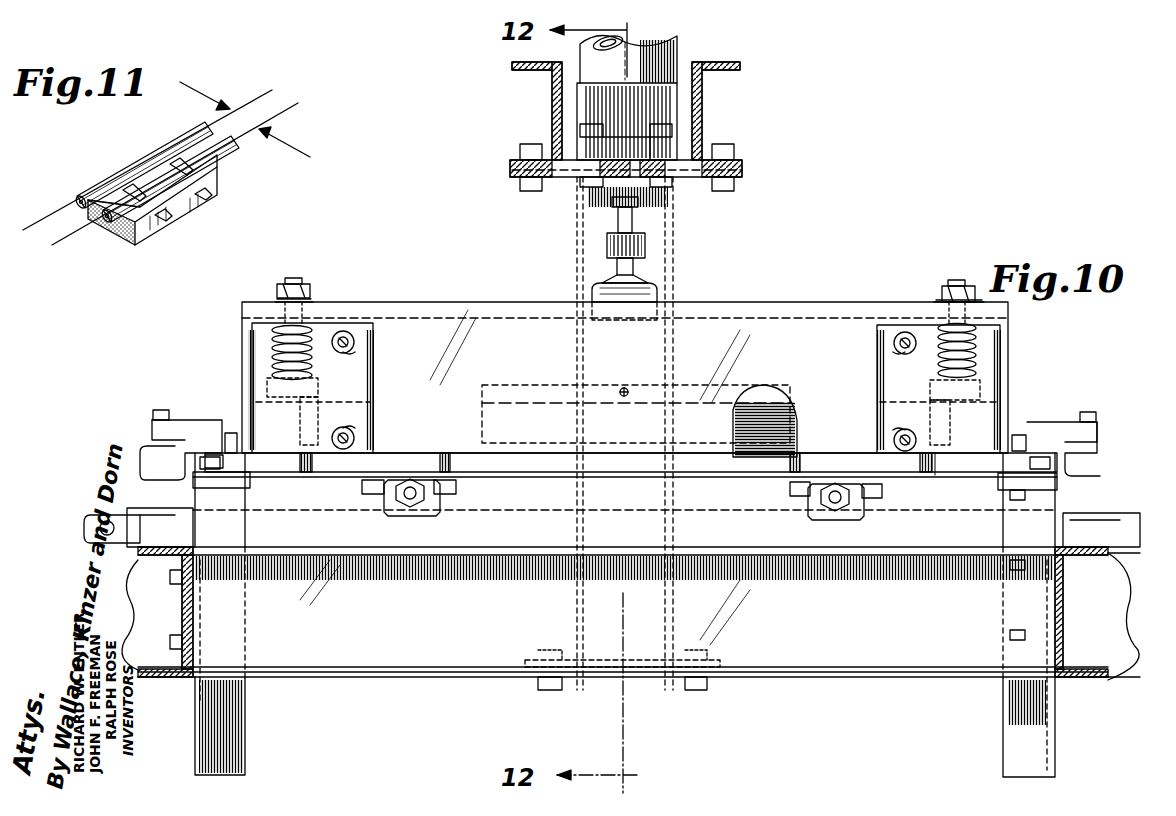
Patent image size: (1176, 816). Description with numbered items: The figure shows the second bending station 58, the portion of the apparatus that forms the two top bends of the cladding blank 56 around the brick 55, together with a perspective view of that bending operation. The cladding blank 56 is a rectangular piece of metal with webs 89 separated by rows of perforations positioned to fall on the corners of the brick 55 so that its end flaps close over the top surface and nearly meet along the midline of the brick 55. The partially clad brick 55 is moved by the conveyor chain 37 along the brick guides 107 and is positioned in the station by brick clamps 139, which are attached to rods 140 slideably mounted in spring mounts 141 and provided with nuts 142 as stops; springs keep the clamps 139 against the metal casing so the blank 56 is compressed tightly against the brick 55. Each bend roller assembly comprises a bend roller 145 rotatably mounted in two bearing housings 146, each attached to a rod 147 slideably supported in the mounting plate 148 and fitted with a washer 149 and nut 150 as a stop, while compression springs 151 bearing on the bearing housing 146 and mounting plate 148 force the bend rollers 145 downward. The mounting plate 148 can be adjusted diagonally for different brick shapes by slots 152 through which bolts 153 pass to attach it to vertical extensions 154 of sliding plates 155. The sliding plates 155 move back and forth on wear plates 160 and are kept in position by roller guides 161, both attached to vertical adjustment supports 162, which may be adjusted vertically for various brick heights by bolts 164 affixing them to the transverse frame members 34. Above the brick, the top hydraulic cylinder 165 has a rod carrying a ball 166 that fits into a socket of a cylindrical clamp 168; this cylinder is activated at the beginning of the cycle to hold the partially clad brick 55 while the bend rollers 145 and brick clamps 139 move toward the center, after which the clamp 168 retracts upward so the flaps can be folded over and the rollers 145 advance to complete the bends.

In FIG. 10, the transverse frame members 34 is at (552, 96).
In FIG. 10, the conveyor chain 37 is at (110, 517).
In FIG. 11, the brick 55 is at (118, 233).
In FIG. 11, the cladding blank 56 is at (215, 190).
In FIG. 10, the second bending station 58 is at (767, 178).
In FIG. 11, the webs 89 is at (130, 180).
In FIG. 10, the brick guides 107 is at (125, 508).
In FIG. 10, the brick clamps 139 is at (625, 496).
In FIG. 10, the rods 140 is at (388, 508).
In FIG. 10, the spring mounts 141 is at (410, 512).
In FIG. 10, the nuts 142 is at (380, 494).
In FIG. 11, the bend roller 145 is at (78, 186).
In FIG. 10, the bend roller 145 is at (776, 400).
In FIG. 10, the bearing housings 146 is at (318, 392).
In FIG. 10, the rod 147 is at (290, 278).
In FIG. 10, the mounting plate 148 is at (625, 496).
In FIG. 10, the washer 149 is at (318, 300).
In FIG. 10, the nut 150 is at (310, 290).
In FIG. 10, the compression springs 151 is at (275, 350).
In FIG. 10, the slots 152 is at (354, 352).
In FIG. 10, the bolts 153 is at (354, 342).
In FIG. 10, the vertical extensions 154 is at (255, 337).
In FIG. 10, the sliding plates 155 is at (930, 472).
In FIG. 10, the wear plates 160 is at (250, 484).
In FIG. 10, the roller guides 161 is at (220, 420).
In FIG. 10, the vertical adjustment supports 162 is at (612, 615).
In FIG. 10, the bolts 164 is at (632, 222).
In FIG. 10, the top hydraulic cylinder 165 is at (677, 46).
In FIG. 10, the ball 166 is at (640, 275).
In FIG. 10, the cylindrical clamp 168 is at (657, 297).